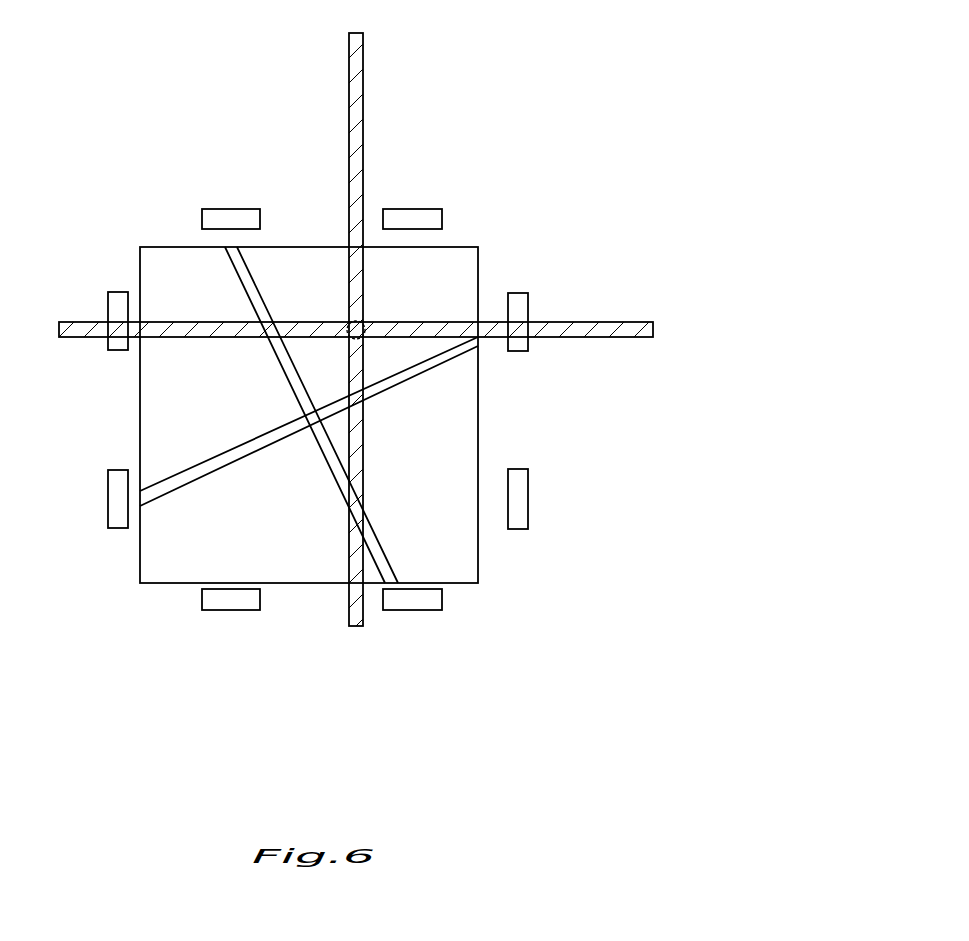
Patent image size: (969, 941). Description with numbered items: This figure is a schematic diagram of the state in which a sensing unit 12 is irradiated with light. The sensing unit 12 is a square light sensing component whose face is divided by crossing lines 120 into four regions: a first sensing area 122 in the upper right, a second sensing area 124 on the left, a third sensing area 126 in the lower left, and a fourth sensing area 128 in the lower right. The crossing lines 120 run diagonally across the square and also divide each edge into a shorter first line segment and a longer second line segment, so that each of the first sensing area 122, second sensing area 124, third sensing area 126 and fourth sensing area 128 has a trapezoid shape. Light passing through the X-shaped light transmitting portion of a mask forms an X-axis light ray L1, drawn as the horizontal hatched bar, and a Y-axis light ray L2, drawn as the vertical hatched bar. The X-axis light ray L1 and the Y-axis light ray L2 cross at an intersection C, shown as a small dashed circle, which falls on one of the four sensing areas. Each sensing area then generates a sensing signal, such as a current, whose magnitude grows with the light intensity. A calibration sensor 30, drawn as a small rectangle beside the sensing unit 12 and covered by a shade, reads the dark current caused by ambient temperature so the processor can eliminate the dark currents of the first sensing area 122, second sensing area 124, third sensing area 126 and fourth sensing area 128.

The sensing unit 12 is at (138, 270).
The calibration sensor 30 is at (519, 313).
The X-axis light ray L1 is at (187, 326).
The Y-axis light ray L2 is at (352, 195).
The intersection C is at (360, 322).
The crossing lines 120 is at (428, 358).
The first sensing area 122 is at (457, 269).
The second sensing area 124 is at (163, 430).
The third sensing area 126 is at (180, 568).
The fourth sensing area 128 is at (452, 546).